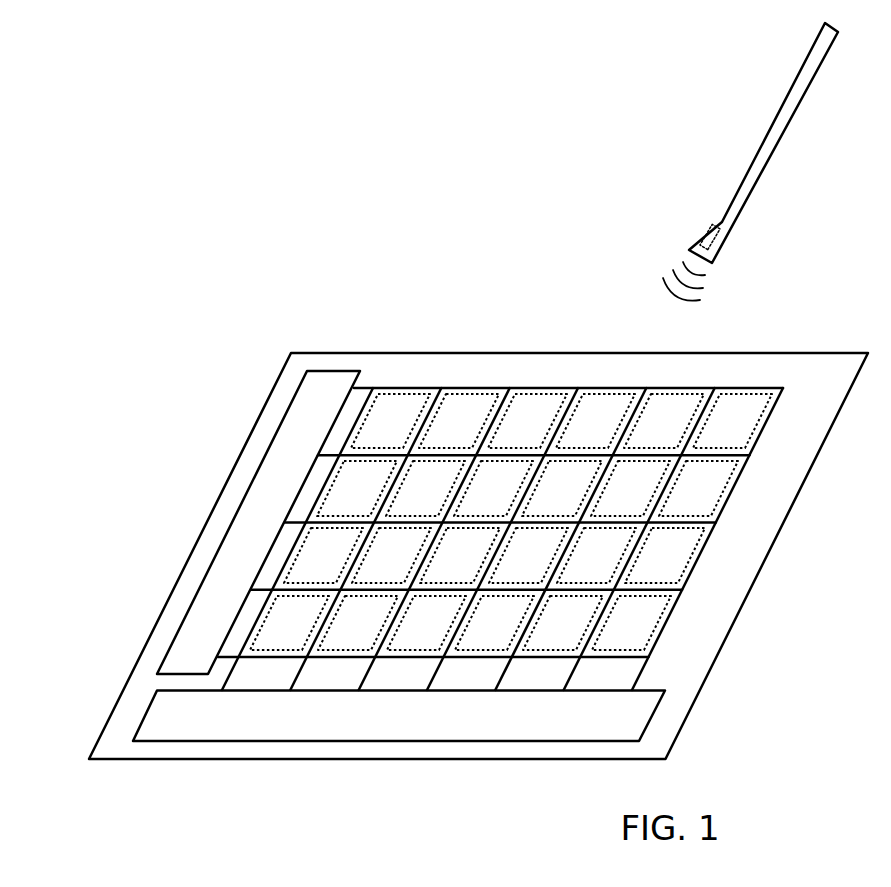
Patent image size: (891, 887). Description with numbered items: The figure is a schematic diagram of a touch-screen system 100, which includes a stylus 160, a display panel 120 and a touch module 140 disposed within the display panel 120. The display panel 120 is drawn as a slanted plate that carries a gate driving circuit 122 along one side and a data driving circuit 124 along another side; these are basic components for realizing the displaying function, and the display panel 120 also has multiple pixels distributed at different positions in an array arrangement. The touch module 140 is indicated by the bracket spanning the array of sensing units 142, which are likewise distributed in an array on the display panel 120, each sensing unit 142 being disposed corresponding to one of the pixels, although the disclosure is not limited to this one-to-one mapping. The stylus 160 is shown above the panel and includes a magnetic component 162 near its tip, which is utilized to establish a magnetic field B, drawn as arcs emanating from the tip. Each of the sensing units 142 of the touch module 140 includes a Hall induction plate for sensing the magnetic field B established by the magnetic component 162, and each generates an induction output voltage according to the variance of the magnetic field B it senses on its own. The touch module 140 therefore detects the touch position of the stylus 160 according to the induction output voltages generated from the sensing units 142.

The touch-screen system 100 is at (340, 163).
The display panel 120 is at (784, 523).
The gate driving circuit 122 is at (237, 513).
The data driving circuit 124 is at (435, 742).
The touch module 140 is at (500, 489).
The sensing units 142 is at (773, 377).
The stylus 160 is at (750, 165).
The magnetic component 162 is at (713, 228).
The magnetic field B is at (694, 282).